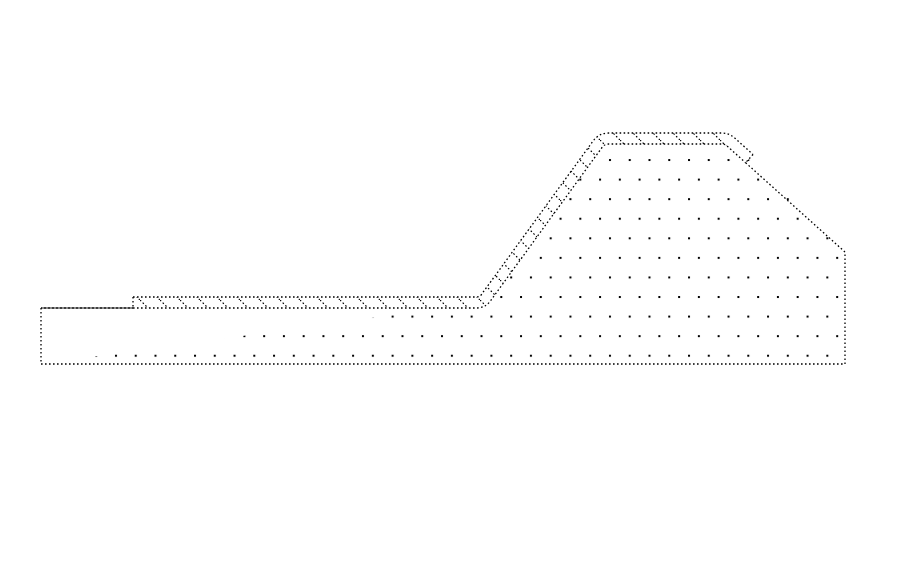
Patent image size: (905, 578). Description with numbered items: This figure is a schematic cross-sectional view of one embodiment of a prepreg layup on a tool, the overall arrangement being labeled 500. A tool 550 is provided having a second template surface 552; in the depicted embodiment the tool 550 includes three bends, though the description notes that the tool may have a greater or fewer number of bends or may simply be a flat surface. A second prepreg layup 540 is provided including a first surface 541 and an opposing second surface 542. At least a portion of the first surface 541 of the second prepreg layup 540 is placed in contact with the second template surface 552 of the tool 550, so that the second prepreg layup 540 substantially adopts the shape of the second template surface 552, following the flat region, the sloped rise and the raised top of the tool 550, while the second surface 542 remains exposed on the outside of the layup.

The optoelectronic device structure 500 is at (77, 101).
The second prepreg layup 540 is at (460, 192).
The first surface 541 is at (723, 166).
The second surface 542 is at (742, 138).
The tool 550 is at (648, 317).
The second template surface 552 is at (93, 300).